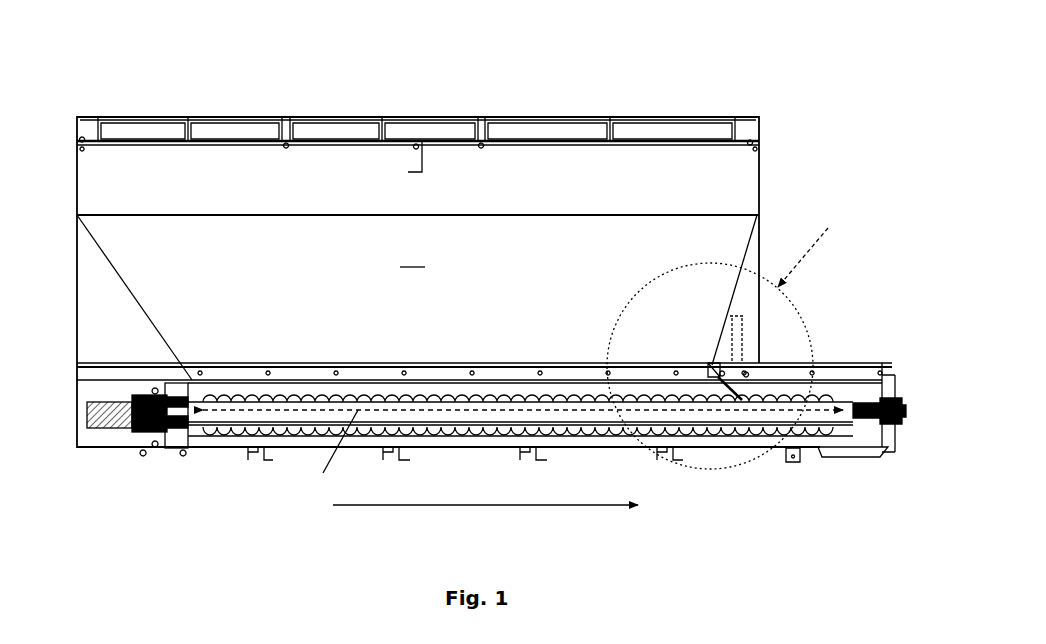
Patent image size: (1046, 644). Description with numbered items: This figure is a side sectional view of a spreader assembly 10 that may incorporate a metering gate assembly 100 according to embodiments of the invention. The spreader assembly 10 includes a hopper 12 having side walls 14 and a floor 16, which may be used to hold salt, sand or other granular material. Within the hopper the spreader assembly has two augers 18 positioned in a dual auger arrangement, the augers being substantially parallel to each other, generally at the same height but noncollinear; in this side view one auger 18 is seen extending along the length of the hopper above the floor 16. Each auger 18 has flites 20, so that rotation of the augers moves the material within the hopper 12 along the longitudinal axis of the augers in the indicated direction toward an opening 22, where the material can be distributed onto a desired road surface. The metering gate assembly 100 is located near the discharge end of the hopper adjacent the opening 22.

The spreader assembly 10 is at (143, 70).
The hopper 12 is at (105, 227).
The side walls 14 is at (412, 257).
The floor 16 is at (720, 433).
The auger 18 is at (450, 417).
The flites 20 is at (500, 392).
The opening 22 is at (860, 457).
The metering gate assembly 100 is at (788, 210).